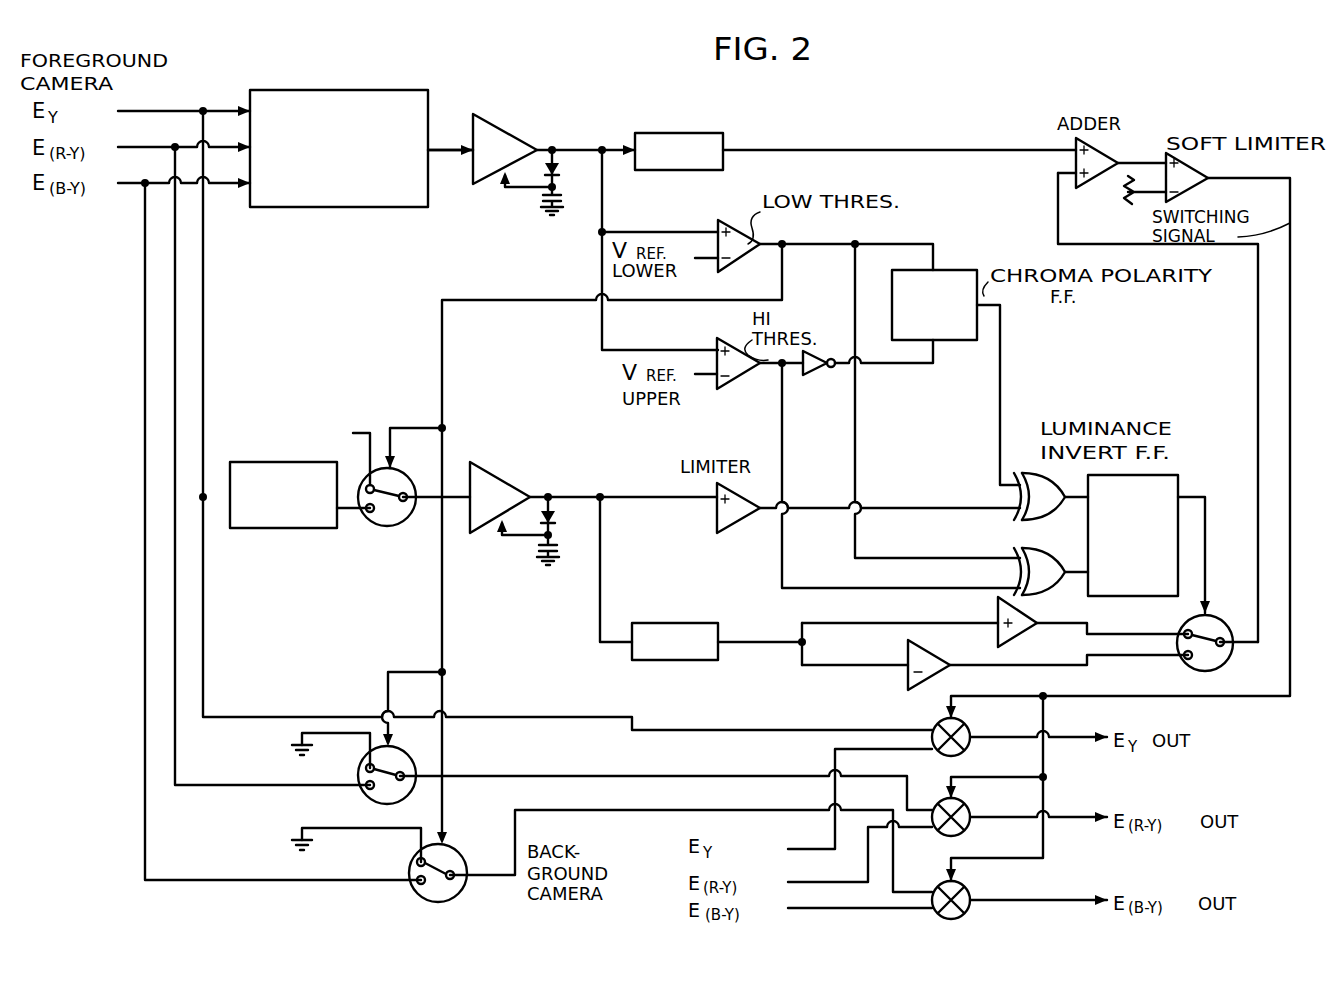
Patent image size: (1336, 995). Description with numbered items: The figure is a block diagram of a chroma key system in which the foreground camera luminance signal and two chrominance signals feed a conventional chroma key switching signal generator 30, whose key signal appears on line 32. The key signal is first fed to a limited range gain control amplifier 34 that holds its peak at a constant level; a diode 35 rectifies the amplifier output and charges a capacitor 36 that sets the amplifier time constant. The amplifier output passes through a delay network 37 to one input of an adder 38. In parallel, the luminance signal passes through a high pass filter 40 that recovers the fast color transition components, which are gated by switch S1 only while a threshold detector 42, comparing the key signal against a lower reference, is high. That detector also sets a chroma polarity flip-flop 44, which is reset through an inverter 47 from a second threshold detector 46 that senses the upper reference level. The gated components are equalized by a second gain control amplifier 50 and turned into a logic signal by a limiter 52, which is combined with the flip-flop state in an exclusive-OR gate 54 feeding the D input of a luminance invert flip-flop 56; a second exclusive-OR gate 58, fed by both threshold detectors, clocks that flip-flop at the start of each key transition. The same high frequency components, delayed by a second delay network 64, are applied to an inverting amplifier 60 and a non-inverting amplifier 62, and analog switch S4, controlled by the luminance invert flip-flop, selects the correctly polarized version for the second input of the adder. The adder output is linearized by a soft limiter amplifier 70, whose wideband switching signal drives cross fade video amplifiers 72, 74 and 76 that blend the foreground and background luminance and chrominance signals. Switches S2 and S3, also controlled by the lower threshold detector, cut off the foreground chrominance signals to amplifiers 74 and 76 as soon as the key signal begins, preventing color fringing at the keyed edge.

The chroma key switching signal generator 30 is at (336, 208).
The line 32 is at (448, 150).
The gain control amplifier 34 is at (490, 180).
The diode 35 is at (565, 165).
The capacitor 36 is at (540, 198).
The delay network 37 is at (661, 170).
The adder 38 is at (1100, 183).
The high pass filter 40 is at (316, 462).
The threshold detector 42 is at (740, 230).
The chroma polarity flip-flop 44 is at (938, 268).
The second threshold detector 46 is at (724, 350).
The inverter 47 is at (814, 370).
The gain control amplifier 50 is at (482, 476).
The limiter 52 is at (718, 520).
The exclusive-OR gate 54 is at (1022, 516).
The luminance invert flip-flop 56 is at (1180, 450).
The second exclusive-OR gate 58 is at (1028, 562).
The inverting amplifier 60 is at (908, 650).
The non-inverting amplifier 62 is at (998, 610).
The second delay network 64 is at (708, 660).
The soft limiter amplifier 70 is at (1200, 170).
The cross fade video amplifier 72 is at (940, 726).
The cross fade video amplifier 74 is at (936, 806).
The cross fade video amplifier 76 is at (936, 884).
The switch S1 is at (392, 524).
The switch S2 is at (358, 798).
The switch S3 is at (408, 866).
The analog switch S4 is at (1226, 652).